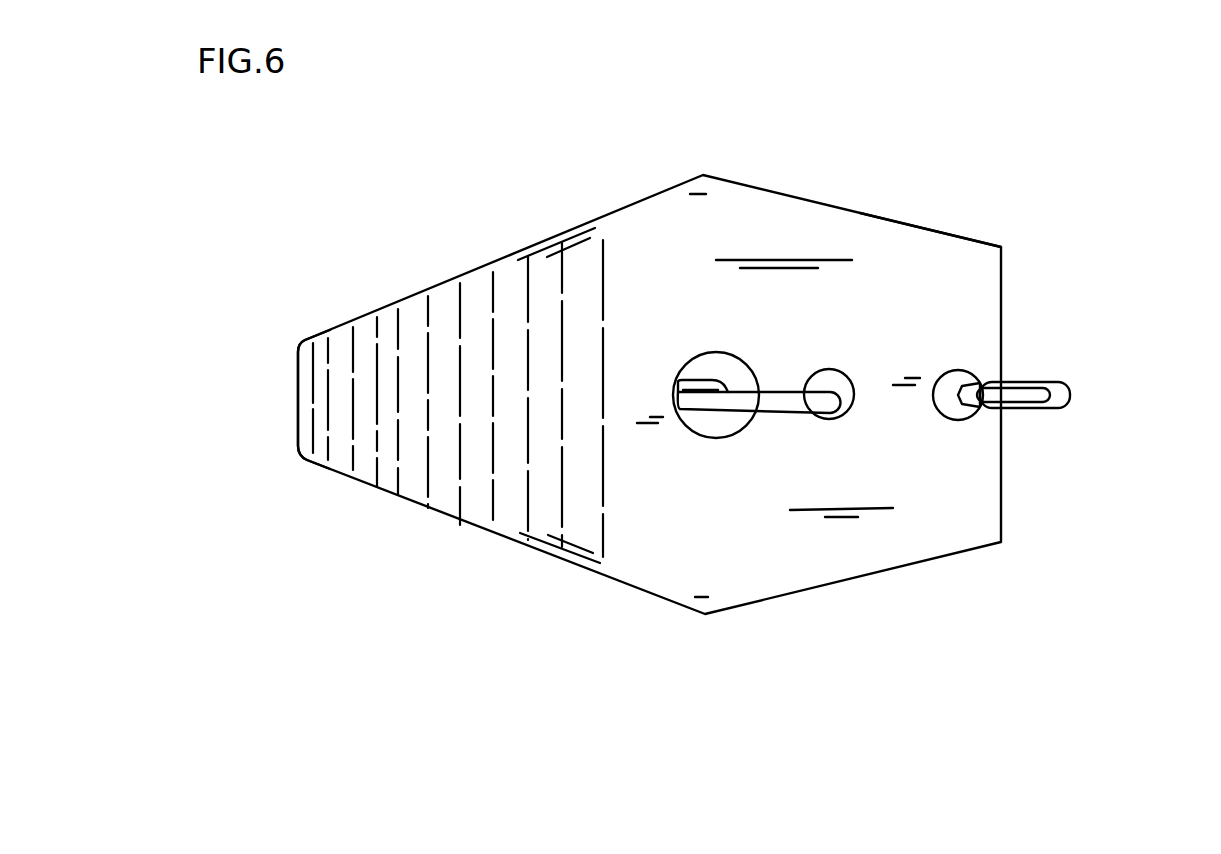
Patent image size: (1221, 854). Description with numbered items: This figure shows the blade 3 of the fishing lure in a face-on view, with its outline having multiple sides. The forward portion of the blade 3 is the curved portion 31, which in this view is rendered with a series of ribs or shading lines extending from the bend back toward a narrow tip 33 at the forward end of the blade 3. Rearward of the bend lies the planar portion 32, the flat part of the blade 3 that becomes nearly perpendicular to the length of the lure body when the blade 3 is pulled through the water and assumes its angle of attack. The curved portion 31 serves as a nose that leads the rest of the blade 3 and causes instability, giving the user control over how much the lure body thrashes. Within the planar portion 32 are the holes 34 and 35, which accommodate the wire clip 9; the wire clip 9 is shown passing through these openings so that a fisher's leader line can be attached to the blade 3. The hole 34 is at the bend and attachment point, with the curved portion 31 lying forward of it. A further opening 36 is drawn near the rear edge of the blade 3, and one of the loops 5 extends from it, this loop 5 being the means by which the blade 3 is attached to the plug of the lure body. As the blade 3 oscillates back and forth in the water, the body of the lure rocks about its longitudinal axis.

The blade 3 is at (826, 220).
The curved portion 31 is at (457, 335).
The planar portion 32 is at (955, 265).
The tip end 33 is at (300, 338).
The hole 34 is at (695, 437).
The hole 35 is at (838, 416).
The opening 36 is at (970, 418).
The wire clip 9 is at (778, 403).
The loop 5 is at (1067, 388).